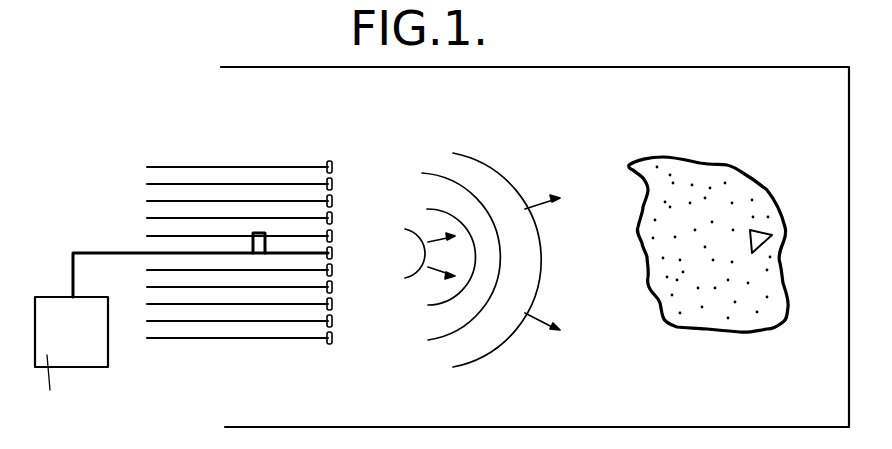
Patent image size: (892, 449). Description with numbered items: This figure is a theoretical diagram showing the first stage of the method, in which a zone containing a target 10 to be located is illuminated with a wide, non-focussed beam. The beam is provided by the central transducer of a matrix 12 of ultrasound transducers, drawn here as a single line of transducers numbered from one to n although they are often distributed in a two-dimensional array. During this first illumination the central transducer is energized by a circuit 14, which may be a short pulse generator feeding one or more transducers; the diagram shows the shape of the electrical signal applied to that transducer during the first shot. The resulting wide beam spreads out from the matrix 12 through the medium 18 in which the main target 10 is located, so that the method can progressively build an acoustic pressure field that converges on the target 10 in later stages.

The main target 10 is at (760, 243).
The matrix of ultrasound transducers 12 is at (303, 160).
The circuit 14 is at (89, 347).
The medium 18 is at (737, 165).